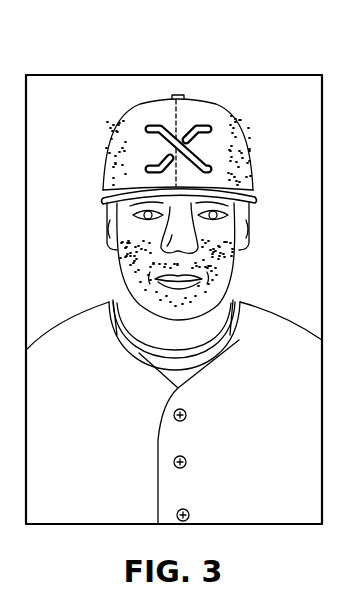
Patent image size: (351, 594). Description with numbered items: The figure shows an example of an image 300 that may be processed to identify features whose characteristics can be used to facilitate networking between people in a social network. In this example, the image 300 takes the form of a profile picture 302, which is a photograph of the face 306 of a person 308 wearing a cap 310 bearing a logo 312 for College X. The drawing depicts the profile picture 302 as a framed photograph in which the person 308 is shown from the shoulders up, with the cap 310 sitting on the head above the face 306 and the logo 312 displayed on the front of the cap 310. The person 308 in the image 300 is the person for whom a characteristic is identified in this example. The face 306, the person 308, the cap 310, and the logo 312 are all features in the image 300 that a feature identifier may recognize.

The image 300 is at (106, 75).
The profile picture 302 is at (238, 82).
The face 306 is at (118, 266).
The person 308 is at (257, 305).
The cap 310 is at (242, 141).
The logo 312 is at (150, 153).